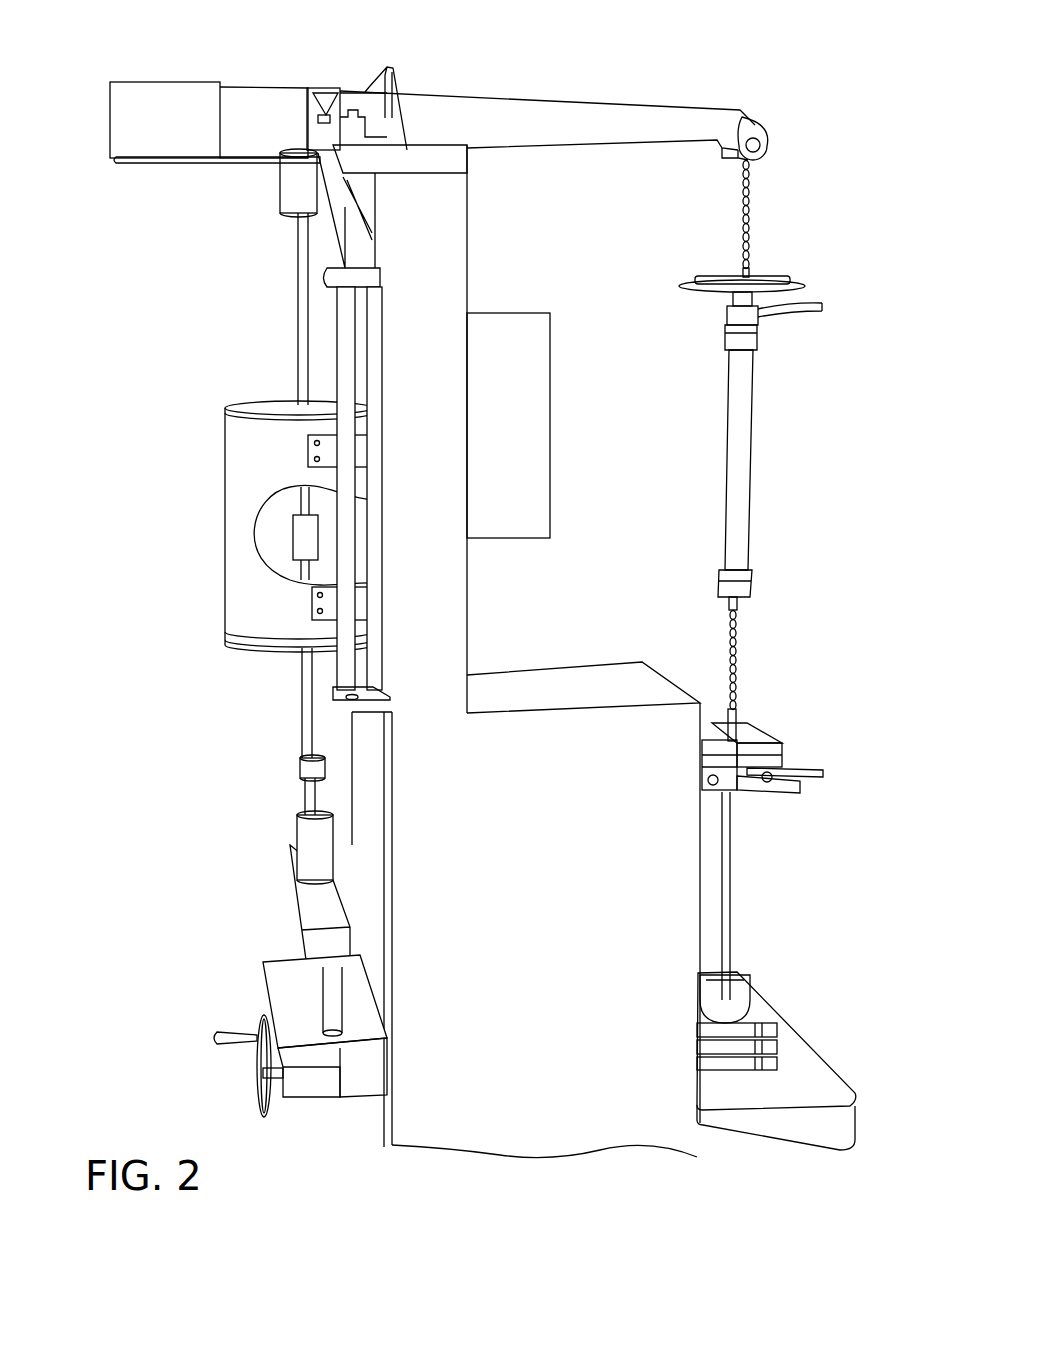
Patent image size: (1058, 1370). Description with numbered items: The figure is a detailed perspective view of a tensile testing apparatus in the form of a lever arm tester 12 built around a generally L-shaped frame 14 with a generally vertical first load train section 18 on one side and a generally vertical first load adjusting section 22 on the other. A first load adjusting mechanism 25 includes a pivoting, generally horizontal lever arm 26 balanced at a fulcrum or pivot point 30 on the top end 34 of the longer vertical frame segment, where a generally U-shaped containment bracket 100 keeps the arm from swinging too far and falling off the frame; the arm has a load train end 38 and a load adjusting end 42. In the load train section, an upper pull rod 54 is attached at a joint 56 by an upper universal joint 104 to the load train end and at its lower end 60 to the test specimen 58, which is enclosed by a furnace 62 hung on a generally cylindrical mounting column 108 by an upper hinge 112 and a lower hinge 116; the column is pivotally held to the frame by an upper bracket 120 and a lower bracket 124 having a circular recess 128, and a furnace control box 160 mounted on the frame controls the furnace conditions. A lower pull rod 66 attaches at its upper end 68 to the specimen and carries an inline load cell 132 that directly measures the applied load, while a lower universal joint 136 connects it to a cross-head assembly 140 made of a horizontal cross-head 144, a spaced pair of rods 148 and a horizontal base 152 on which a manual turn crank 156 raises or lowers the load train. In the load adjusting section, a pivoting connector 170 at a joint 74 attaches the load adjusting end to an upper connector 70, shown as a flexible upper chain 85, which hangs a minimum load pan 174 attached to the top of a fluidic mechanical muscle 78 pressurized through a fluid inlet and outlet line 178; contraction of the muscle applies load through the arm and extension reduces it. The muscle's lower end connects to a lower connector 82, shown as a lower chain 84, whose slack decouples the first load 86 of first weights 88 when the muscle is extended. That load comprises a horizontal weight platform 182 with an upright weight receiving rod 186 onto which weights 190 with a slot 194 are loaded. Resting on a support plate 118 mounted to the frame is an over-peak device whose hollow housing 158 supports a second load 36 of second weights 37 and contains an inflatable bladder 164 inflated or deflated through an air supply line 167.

The lever arm tester 12 is at (655, 100).
The frame 14 is at (462, 598).
The first load train section 18 is at (167, 573).
The first load adjusting section 22 is at (808, 548).
The first load adjusting mechanism 25 is at (752, 402).
The lever arm 26 is at (548, 95).
The pivot point 30 is at (322, 94).
The top end 34 is at (445, 213).
The second load 36 is at (775, 727).
The second weights 37 is at (745, 726).
The load train end 38 is at (247, 85).
The load adjusting end 42 is at (740, 125).
The upper pull rod 54 is at (293, 272).
The joint 56 is at (275, 182).
The test specimen 58 is at (298, 540).
The lower end 60 is at (302, 512).
The furnace 62 is at (225, 481).
The lower pull rod 66 is at (303, 718).
The upper end 68 is at (308, 563).
The upper connector 70 is at (752, 212).
The joint 74 is at (790, 130).
The fluidic mechanical muscle 78 is at (748, 455).
The lower connector 82 is at (736, 653).
The lower chain 84 is at (730, 641).
The upper chain 85 is at (738, 220).
The first load 86 is at (788, 890).
The first weights 88 is at (773, 1060).
The containment bracket 100 is at (393, 67).
The upper universal joint 104 is at (285, 200).
The mounting column 108 is at (345, 375).
The upper hinge 112 is at (310, 463).
The lower hinge 116 is at (310, 602).
The support plate 118 is at (780, 792).
The upper bracket 120 is at (363, 275).
The lower bracket 124 is at (347, 712).
The circular recess 128 is at (333, 690).
The inline load cell 132 is at (300, 772).
The lower universal joint 136 is at (308, 840).
The cross-head assembly 140 is at (233, 940).
The cross-head 144 is at (312, 905).
The rods 148 is at (323, 1020).
The horizontal base 152 is at (363, 1085).
The manual turn crank 156 is at (257, 1093).
The hollow housing 158 is at (728, 773).
The furnace control box 160 is at (533, 448).
The inflatable bladder 164 is at (707, 782).
The air supply line 167 is at (805, 777).
The pivoting connector 170 is at (733, 158).
The minimum load pan 174 is at (768, 275).
The fluid inlet and outlet line 178 is at (807, 317).
The weight platform 182 is at (750, 1065).
The weight receiving rod 186 is at (732, 842).
The weights 190 is at (783, 1055).
The slot 194 is at (753, 997).